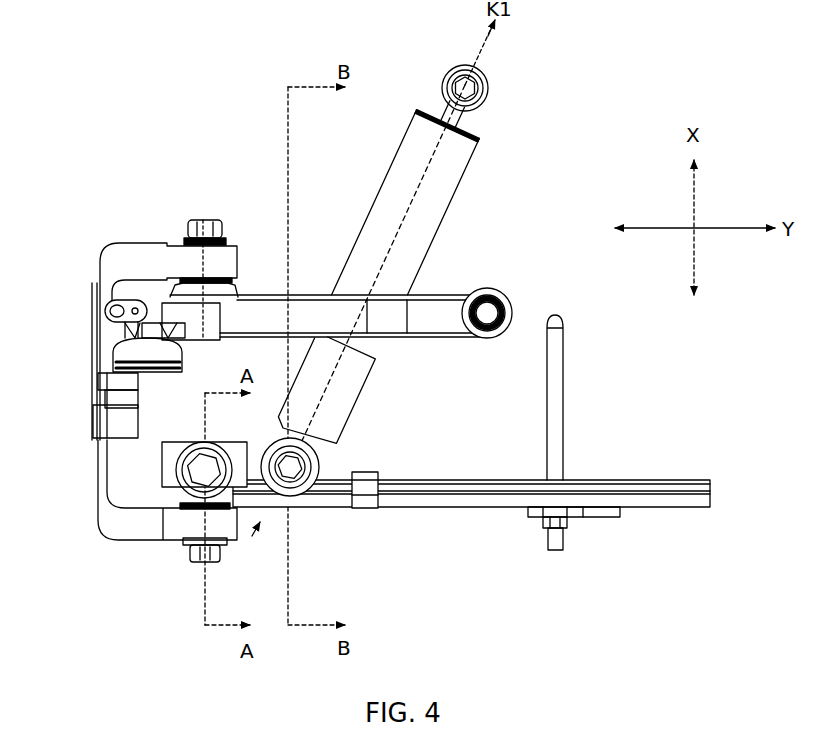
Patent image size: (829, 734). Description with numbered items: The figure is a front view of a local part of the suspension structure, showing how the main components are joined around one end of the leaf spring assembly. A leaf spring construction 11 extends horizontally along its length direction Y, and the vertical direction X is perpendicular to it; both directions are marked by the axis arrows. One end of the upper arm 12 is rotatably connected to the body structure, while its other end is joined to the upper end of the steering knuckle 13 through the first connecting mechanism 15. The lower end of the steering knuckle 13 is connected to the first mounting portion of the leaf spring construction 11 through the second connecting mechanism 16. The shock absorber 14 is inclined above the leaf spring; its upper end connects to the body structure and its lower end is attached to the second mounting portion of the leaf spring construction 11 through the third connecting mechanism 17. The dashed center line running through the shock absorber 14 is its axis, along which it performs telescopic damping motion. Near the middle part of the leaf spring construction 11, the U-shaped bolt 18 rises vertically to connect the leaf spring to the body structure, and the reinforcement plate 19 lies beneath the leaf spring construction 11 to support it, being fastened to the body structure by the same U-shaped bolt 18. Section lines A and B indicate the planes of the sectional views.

The leaf spring construction 11 is at (428, 510).
The upper arm 12 is at (497, 290).
The steering knuckle 13 is at (87, 381).
The shock absorber 14 is at (470, 163).
The first connecting mechanism 15 is at (222, 238).
The second connecting mechanism 16 is at (163, 478).
The third connecting mechanism 17 is at (296, 494).
The U-shaped bolt 18 is at (570, 372).
The reinforcement plate 19 is at (597, 520).